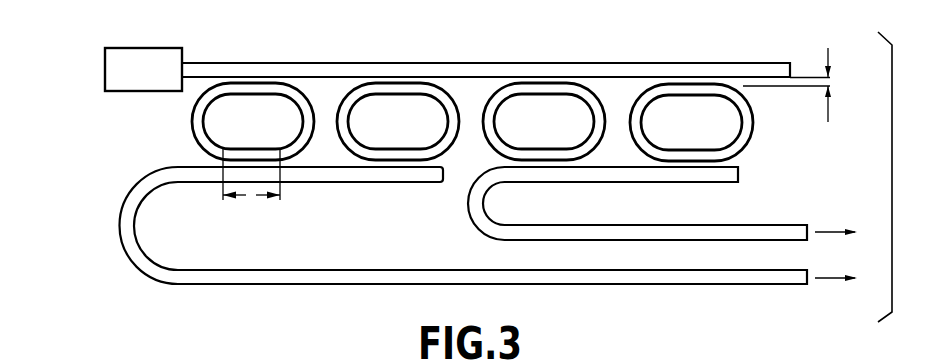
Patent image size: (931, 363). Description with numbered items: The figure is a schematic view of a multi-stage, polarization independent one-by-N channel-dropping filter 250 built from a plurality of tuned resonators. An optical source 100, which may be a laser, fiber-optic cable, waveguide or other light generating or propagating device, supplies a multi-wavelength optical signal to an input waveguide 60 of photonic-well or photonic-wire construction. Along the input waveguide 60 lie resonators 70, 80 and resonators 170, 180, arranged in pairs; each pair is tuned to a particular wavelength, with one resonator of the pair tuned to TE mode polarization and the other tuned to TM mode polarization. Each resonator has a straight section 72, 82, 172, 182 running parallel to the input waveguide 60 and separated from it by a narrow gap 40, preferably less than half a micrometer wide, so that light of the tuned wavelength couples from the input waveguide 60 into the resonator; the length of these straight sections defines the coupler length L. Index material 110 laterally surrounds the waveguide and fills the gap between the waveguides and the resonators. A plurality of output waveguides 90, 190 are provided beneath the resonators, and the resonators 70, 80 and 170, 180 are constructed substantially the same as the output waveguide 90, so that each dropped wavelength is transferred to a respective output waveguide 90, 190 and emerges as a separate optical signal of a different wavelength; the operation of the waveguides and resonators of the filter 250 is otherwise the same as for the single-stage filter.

The 1×N channel-dropping filter 250 is at (92, 68).
The optical source 100 is at (165, 50).
The input waveguide 60 is at (199, 64).
The index material 110 is at (358, 50).
The resonator 70 is at (193, 116).
The straight section 72 is at (260, 88).
The resonator 80 is at (348, 98).
The straight section 82 is at (385, 88).
The resonator 170 is at (503, 92).
The straight section 172 is at (550, 90).
The resonator 180 is at (656, 90).
The straight section 182 is at (695, 89).
The coupling gap 40 is at (830, 78).
The output waveguide 90 is at (770, 282).
The output waveguide 190 is at (772, 230).
The coupler length L is at (250, 197).